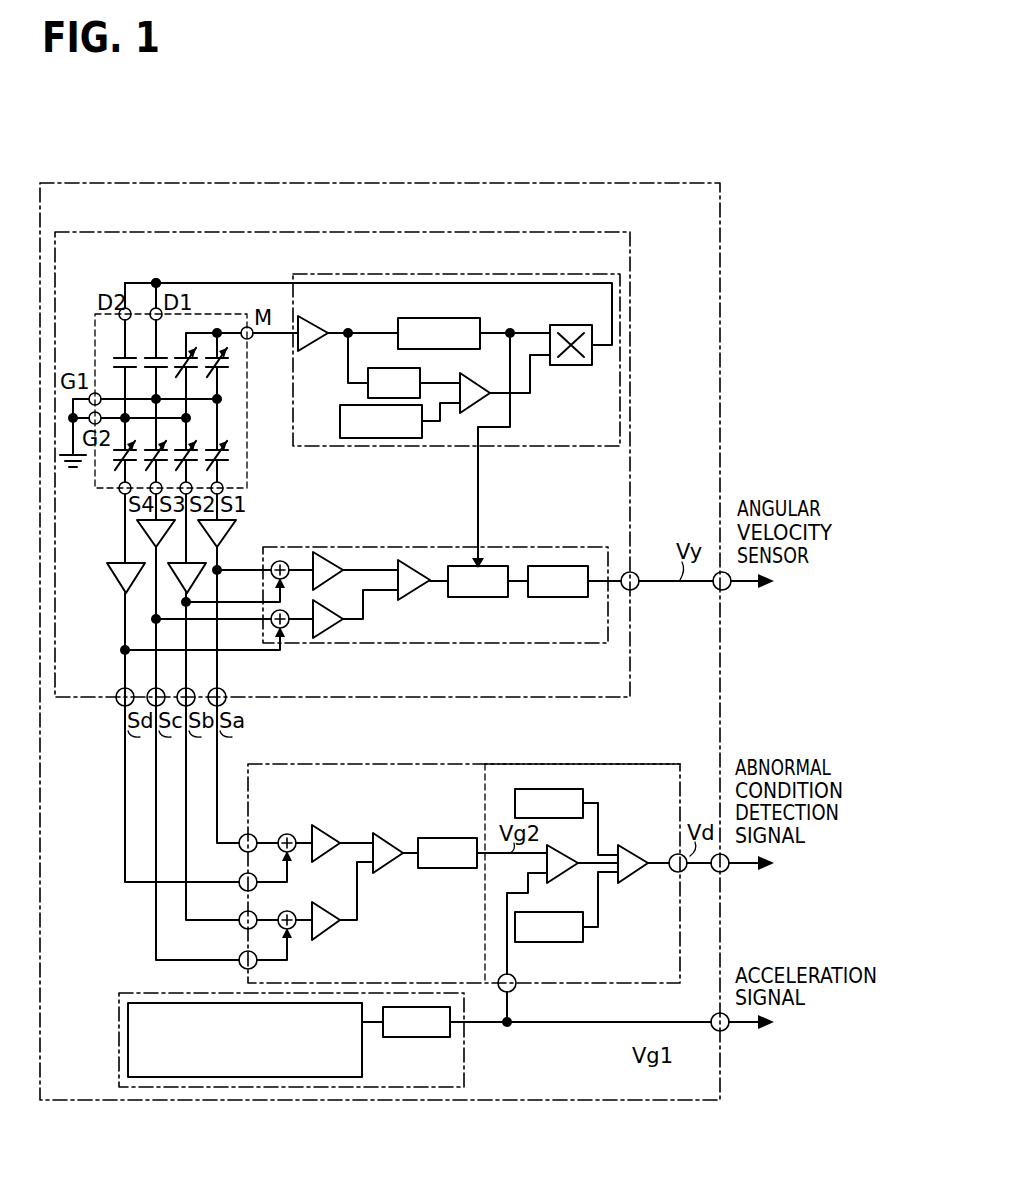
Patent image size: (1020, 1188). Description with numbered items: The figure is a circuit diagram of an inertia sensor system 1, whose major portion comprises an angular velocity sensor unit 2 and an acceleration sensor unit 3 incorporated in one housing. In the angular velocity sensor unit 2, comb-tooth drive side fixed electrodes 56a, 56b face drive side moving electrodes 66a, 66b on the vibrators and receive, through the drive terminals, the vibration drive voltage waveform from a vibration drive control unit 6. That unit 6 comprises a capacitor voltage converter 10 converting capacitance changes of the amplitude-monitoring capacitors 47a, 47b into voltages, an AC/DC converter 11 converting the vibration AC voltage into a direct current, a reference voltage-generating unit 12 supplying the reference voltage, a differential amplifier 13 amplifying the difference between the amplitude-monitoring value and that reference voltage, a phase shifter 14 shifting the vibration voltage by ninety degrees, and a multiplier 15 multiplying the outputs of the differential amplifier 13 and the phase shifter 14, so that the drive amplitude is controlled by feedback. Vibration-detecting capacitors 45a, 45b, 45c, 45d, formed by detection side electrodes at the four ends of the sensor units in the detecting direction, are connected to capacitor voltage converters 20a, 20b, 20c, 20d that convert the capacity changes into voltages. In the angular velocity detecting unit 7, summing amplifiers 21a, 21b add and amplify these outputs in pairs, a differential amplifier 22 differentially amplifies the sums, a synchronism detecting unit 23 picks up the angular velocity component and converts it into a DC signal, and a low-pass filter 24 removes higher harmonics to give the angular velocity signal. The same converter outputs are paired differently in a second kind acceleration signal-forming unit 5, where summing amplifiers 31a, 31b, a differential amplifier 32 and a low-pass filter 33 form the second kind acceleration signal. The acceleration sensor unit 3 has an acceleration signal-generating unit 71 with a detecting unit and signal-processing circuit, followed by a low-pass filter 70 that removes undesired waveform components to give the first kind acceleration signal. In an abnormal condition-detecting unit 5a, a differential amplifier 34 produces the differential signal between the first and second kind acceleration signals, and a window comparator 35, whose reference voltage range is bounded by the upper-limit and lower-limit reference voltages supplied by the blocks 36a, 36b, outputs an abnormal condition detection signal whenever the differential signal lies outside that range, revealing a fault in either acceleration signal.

The inertia sensor system 1 is at (372, 183).
The angular velocity sensor unit 2 is at (283, 232).
The acceleration sensor unit 3 is at (150, 992).
The second kind acceleration signal-forming unit 5 is at (365, 765).
The abnormal condition-detecting unit 5a is at (614, 765).
The vibration drive control unit 6 is at (428, 273).
The angular velocity detecting unit 7 is at (555, 547).
The capacitor voltage converter 10 is at (320, 328).
The AC/DC converter 11 is at (422, 374).
The reference voltage-generating unit 12 is at (340, 419).
The differential amplifier 13 is at (478, 386).
The phase shifter 14 is at (438, 318).
The multiplier 15 is at (567, 365).
The capacitor voltage converter 20a is at (236, 535).
The capacitor voltage converter 20b is at (218, 570).
The capacitor voltage converter 20c is at (143, 530).
The capacitor voltage converter 20d is at (106, 576).
The summing amplifier 21a is at (336, 556).
The summing amplifier 21b is at (330, 640).
The differential amplifier 22 is at (412, 594).
The synchronism detecting unit 23 is at (478, 597).
The low-pass filter 24 is at (557, 597).
The summing amplifier 31a is at (326, 832).
The summing amplifier 31b is at (333, 932).
The differential amplifier 32 is at (393, 844).
The low-pass filter 33 is at (440, 838).
The differential amplifier 34 is at (562, 856).
The window comparator 35 is at (627, 851).
The reference voltage source Vref2 36a is at (576, 789).
The reference voltage source Vref3 36b is at (586, 942).
The vibration-detecting capacitor 45a is at (228, 462).
The vibration-detecting capacitor 45b is at (200, 472).
The vibration-detecting capacitor 45c is at (150, 463).
The vibration-detecting capacitor 45d is at (120, 463).
The amplitude-monitoring capacitor 47a is at (220, 368).
The amplitude-monitoring capacitor 47b is at (192, 378).
The drive side fixed electrode 56a is at (118, 367).
The drive side fixed electrode 56b is at (150, 360).
The drive side moving electrode 66a is at (152, 330).
The drive side moving electrode 66b is at (122, 345).
The low-pass filter 70 is at (414, 1037).
The acceleration signal-generating unit 71 is at (128, 1024).